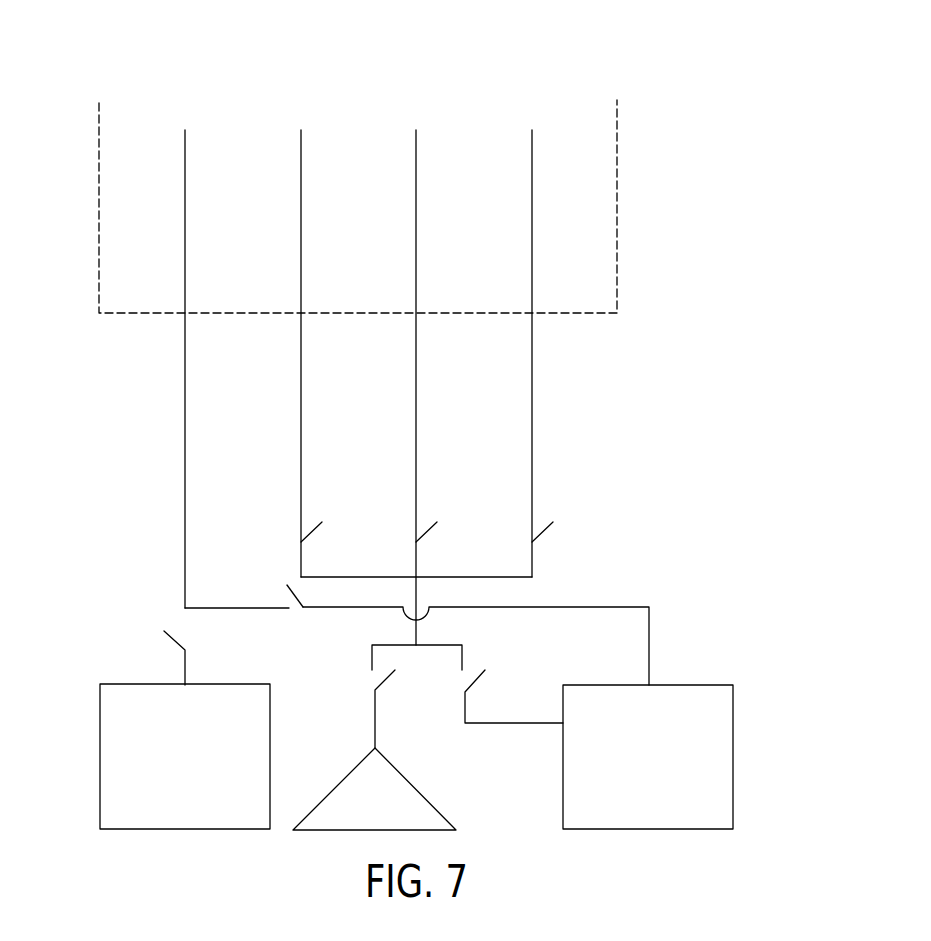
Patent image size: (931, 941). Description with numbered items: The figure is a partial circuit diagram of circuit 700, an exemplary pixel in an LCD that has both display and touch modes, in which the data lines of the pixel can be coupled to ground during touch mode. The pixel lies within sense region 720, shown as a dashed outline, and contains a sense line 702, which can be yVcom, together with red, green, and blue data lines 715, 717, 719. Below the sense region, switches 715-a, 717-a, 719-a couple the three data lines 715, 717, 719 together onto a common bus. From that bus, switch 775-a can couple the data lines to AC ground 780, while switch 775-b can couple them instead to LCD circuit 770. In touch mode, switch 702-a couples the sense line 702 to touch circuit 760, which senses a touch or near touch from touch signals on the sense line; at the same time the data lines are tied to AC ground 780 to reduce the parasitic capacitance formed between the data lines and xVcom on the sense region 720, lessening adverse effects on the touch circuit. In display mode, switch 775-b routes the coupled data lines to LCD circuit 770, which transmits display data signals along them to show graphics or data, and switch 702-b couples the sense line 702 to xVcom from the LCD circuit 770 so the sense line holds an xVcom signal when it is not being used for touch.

The circuit 700 is at (624, 60).
The sense line 702 is at (185, 152).
The red data line 715 is at (301, 152).
The green data line 717 is at (416, 152).
The blue data line 719 is at (532, 152).
The sense region 720 is at (617, 208).
The switch 715-a is at (303, 562).
The switch 717-a is at (418, 562).
The switch 719-a is at (534, 562).
The switch 702-a is at (183, 668).
The switch 702-b is at (297, 612).
The switch 775-a is at (373, 680).
The switch 775-b is at (480, 668).
The touch circuit 760 is at (100, 757).
The LCD circuit 770 is at (733, 757).
The AC ground 780 is at (418, 790).